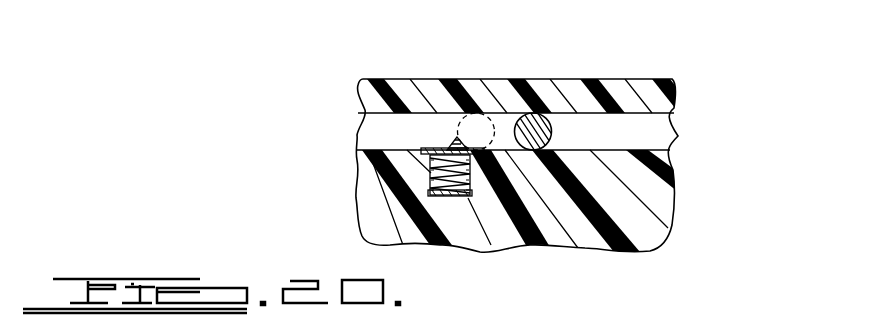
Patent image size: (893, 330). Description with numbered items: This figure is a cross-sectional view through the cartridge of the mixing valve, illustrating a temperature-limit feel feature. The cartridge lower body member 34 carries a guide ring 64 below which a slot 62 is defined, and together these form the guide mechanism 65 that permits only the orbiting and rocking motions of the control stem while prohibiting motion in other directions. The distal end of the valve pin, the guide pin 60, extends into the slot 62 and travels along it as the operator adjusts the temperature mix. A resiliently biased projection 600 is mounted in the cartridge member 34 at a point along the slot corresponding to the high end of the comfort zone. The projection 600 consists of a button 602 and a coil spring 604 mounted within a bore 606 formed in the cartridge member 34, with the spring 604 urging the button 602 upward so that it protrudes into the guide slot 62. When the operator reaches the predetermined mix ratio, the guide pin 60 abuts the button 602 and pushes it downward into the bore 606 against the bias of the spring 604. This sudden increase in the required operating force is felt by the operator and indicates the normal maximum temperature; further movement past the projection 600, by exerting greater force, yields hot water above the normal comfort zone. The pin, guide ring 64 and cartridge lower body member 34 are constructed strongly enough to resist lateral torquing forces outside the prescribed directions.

The cartridge lower body member 34 is at (613, 241).
The distal end of pin 60 is at (532, 119).
The slot 62 is at (646, 130).
The guide ring 64 is at (650, 95).
The guide mechanism 65 is at (580, 129).
The resiliently biased projection 600 is at (442, 140).
The button 602 is at (430, 153).
The coil spring 604 is at (450, 196).
The bore 606 is at (448, 186).